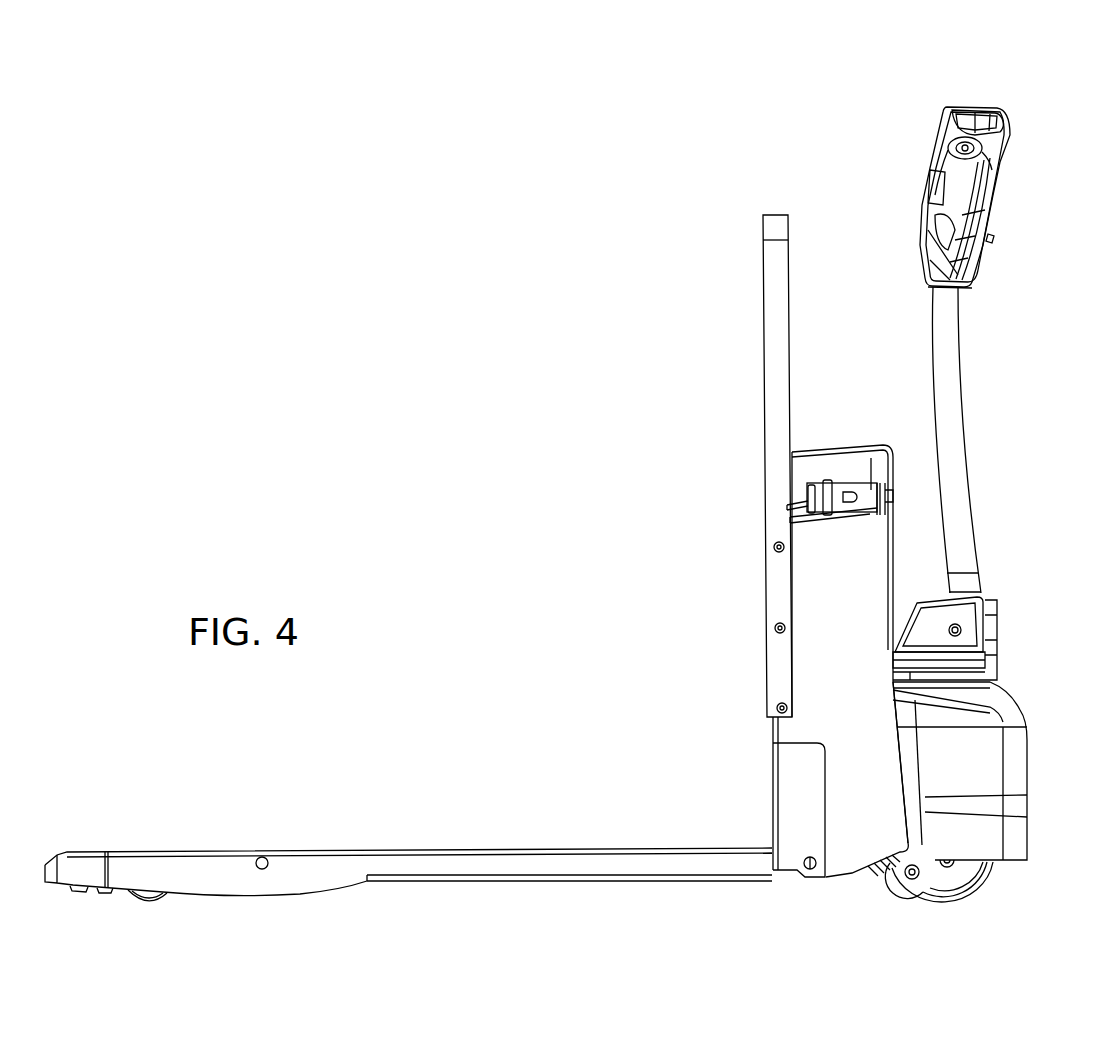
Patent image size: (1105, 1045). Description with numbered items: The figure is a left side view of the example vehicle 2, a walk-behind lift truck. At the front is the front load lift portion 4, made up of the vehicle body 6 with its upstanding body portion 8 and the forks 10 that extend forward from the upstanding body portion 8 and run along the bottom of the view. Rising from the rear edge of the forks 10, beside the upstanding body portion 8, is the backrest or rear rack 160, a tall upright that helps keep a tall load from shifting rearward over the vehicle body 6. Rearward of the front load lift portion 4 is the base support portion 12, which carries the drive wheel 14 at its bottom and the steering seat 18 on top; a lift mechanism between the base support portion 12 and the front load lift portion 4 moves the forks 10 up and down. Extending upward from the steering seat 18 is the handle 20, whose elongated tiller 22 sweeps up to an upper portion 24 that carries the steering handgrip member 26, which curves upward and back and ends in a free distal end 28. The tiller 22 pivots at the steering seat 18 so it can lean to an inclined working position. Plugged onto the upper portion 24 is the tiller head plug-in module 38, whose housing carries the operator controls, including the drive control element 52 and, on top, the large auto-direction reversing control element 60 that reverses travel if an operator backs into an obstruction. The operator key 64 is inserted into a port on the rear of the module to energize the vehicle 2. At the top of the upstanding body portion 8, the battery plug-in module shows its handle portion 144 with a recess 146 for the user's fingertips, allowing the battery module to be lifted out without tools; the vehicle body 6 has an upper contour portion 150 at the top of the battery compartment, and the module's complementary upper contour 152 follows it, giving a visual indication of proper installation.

The vehicle 2 is at (570, 267).
The front load lift portion 4 is at (802, 882).
The vehicle body 6 is at (869, 873).
The upstanding body portion 8 is at (860, 566).
The forks 10 is at (325, 870).
The base support portion 12 is at (1030, 831).
The drive wheel 14 is at (976, 880).
The steering seat 18 is at (1002, 685).
The handle 20 is at (965, 346).
The elongated tiller 22 is at (948, 410).
The upper portion 24 is at (958, 297).
The steering handgrip member 26 is at (986, 211).
The distal end 28 is at (986, 176).
The tiller head plug-in module 38 is at (948, 104).
The drive control element 52 is at (946, 140).
The auto-direction reversing control element 60 is at (987, 128).
The operator key 64 is at (992, 240).
The handle portion 144 is at (803, 481).
The recess 146 is at (785, 508).
The upper contour portion 150 is at (821, 531).
The complementary upper contour 152 is at (794, 526).
The rear rack 160 is at (772, 293).